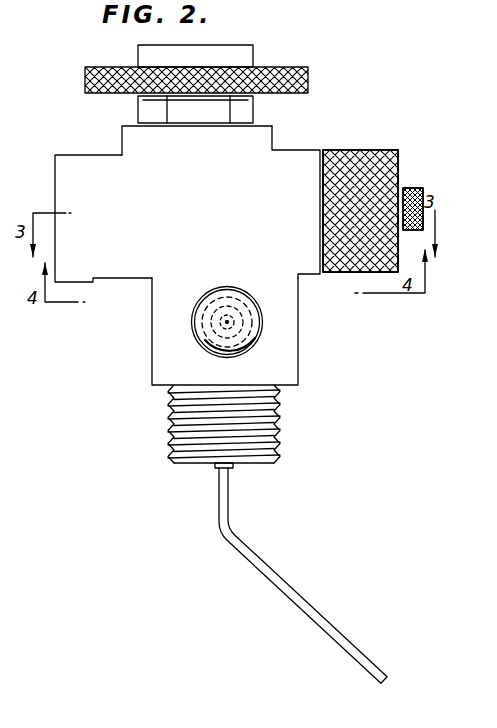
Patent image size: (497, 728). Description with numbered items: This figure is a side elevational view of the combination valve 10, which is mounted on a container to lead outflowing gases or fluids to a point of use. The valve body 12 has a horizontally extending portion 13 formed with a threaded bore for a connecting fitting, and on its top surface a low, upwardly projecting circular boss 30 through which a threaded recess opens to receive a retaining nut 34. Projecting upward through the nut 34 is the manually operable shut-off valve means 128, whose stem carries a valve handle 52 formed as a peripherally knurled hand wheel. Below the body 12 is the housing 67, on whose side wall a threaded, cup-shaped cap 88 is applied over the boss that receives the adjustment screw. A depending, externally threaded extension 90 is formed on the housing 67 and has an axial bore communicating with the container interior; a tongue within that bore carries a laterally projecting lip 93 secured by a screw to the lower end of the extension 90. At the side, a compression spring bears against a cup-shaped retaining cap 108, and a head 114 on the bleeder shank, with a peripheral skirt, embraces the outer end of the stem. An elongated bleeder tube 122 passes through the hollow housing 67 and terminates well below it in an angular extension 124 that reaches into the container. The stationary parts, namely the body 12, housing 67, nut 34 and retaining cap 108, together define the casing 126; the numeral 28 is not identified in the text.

The seal 28 is at (10, 74).
The manually operable shut-off valve means 128 is at (258, 46).
The valve handle 52 is at (304, 67).
The retaining nut 34 is at (139, 107).
The horizontally extending portion 13 is at (62, 154).
The circular boss 30 is at (121, 135).
The valve body 12 is at (291, 158).
The casing 126 is at (240, 146).
The valve 10 is at (118, 285).
The retaining cap 108 is at (368, 151).
The head 114 is at (412, 188).
The housing 67 is at (151, 338).
The cap 88 is at (256, 328).
The externally threaded extension 90 is at (172, 414).
The lip 93 is at (218, 469).
The bleeder tube 122 is at (229, 494).
The angular extension 124 is at (334, 624).